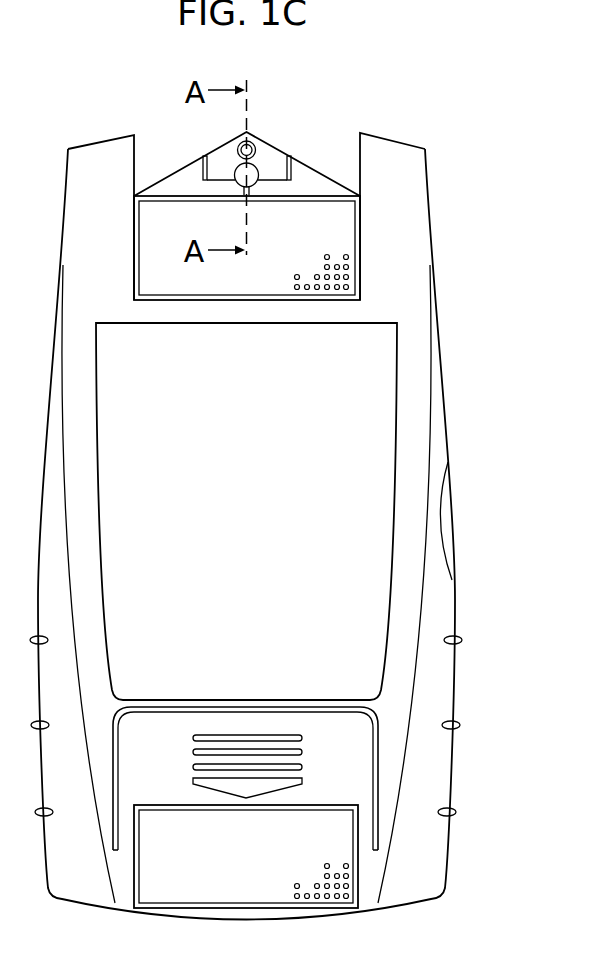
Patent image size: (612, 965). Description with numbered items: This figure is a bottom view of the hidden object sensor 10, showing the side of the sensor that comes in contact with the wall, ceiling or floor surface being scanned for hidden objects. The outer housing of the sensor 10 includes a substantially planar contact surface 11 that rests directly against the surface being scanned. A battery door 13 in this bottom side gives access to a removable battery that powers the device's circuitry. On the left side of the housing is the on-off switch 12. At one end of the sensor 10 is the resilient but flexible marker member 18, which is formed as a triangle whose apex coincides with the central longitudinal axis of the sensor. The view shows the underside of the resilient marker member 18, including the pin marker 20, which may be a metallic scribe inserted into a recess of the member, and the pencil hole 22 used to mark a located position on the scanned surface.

The hidden object sensor 10 is at (448, 124).
The contact surface 11 is at (407, 432).
The on-off switch 12 is at (445, 520).
The battery door 13 is at (323, 779).
The resilient marker member 18 is at (278, 158).
The pin marker 20 is at (251, 143).
The pencil hole 22 is at (255, 161).